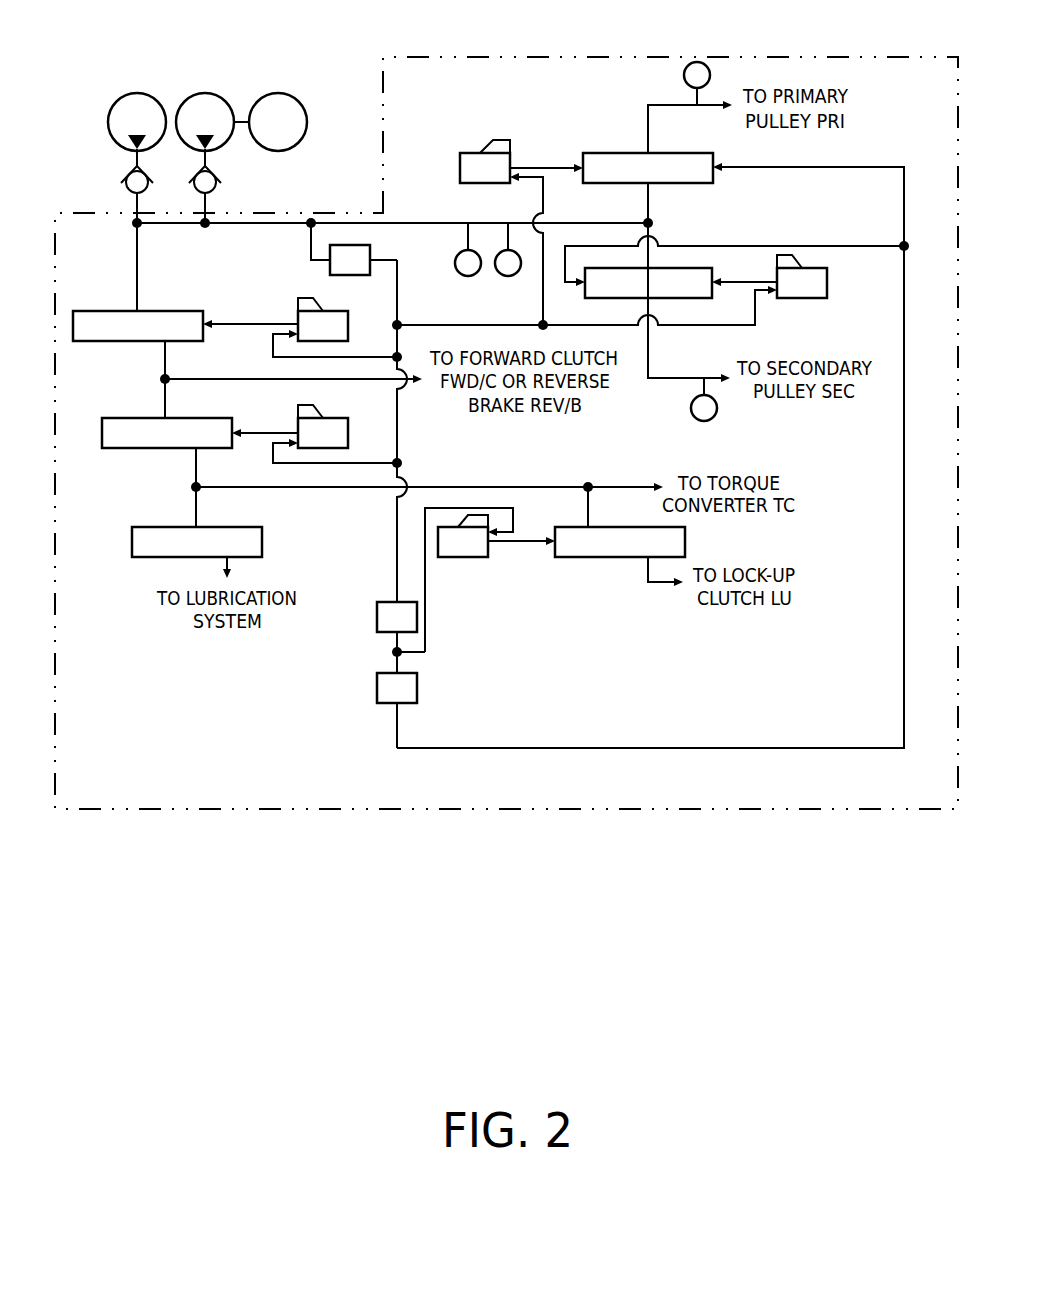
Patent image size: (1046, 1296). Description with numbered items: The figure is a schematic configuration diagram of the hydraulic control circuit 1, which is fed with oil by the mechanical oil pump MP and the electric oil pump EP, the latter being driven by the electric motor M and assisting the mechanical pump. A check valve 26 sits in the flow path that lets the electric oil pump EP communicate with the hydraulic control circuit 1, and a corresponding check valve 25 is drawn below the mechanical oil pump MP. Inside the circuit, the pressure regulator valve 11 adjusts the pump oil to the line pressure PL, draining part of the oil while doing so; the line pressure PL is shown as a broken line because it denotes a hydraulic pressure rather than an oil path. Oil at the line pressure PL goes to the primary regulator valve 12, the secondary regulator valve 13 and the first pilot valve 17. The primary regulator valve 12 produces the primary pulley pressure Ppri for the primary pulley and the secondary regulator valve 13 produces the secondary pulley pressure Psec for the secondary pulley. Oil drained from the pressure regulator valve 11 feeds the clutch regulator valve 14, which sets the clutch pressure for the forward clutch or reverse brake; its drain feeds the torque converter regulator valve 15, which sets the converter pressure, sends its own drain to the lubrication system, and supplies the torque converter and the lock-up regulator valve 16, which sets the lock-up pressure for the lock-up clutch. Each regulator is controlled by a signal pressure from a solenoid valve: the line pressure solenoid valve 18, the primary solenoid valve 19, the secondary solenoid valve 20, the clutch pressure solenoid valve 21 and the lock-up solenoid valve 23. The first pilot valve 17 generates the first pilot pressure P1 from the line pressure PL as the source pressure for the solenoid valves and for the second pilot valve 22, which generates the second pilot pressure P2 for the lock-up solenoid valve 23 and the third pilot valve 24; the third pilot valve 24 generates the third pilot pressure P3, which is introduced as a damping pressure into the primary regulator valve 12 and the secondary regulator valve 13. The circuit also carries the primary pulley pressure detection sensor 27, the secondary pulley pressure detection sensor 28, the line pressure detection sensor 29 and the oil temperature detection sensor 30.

The hydraulic control circuit 1 is at (487, 56).
The pressure regulator valve 11 is at (102, 310).
The primary regulator valve 12 is at (613, 152).
The secondary regulator valve 13 is at (692, 267).
The clutch regulator valve 14 is at (132, 417).
The torque converter regulator valve 15 is at (162, 527).
The lock-up regulator valve 16 is at (590, 557).
The first pilot valve 17 is at (372, 249).
The line pressure solenoid valve 18 is at (338, 310).
The primary solenoid valve 19 is at (460, 163).
The secondary solenoid valve 20 is at (827, 282).
The clutch pressure solenoid valve 21 is at (338, 418).
The second pilot valve 22 is at (377, 615).
The lock-up solenoid valve 23 is at (462, 557).
The third pilot valve 24 is at (377, 687).
The check valve 25 is at (120, 181).
The check valve 26 is at (217, 187).
The primary pulley pressure detection sensor 27 is at (696, 62).
The secondary pulley pressure detection sensor 28 is at (704, 421).
The line pressure detection sensor 29 is at (508, 276).
The oil temperature detection sensor 30 is at (468, 276).
The mechanical oil pump MP is at (138, 93).
The electric oil pump EP is at (206, 93).
The electric motor M is at (278, 93).
The line pressure PL is at (422, 222).
The first pilot pressure P1 is at (400, 282).
The second pilot pressure P2 is at (390, 640).
The third pilot pressure P3 is at (440, 747).
The primary pulley pressure Ppri is at (650, 128).
The secondary pulley pressure Psec is at (652, 347).